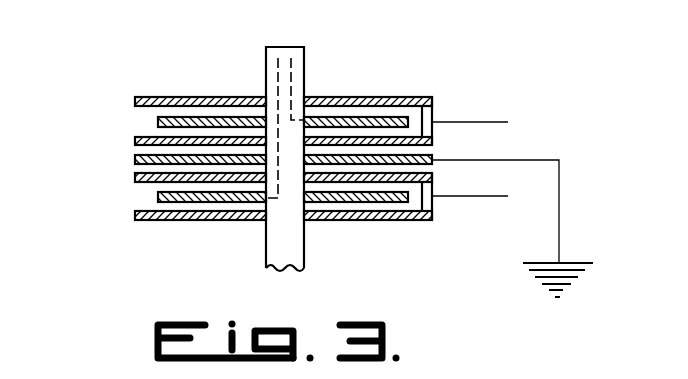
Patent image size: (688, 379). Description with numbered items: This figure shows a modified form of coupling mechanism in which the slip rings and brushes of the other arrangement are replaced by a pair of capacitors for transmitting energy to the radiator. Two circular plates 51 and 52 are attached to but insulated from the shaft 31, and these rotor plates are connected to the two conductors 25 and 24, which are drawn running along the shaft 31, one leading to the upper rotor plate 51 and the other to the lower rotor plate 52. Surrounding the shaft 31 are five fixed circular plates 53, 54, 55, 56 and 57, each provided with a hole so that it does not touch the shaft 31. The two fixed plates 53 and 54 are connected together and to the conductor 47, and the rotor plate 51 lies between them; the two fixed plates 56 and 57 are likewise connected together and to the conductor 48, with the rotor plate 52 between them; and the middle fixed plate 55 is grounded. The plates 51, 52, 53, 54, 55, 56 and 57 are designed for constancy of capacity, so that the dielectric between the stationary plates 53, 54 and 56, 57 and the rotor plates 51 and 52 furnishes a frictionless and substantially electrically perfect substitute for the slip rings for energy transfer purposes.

The conductor 24 is at (278, 65).
The conductor 25 is at (291, 68).
The shaft 31 is at (297, 254).
The conductor 47 is at (496, 124).
The conductor 48 is at (485, 197).
The circular plate 51 is at (158, 122).
The circular plate 52 is at (158, 197).
The fixed circular plate 53 is at (135, 101).
The fixed circular plate 54 is at (135, 141).
The fixed circular plate 55 is at (135, 159).
The fixed circular plate 56 is at (135, 178).
The fixed circular plate 57 is at (135, 215).